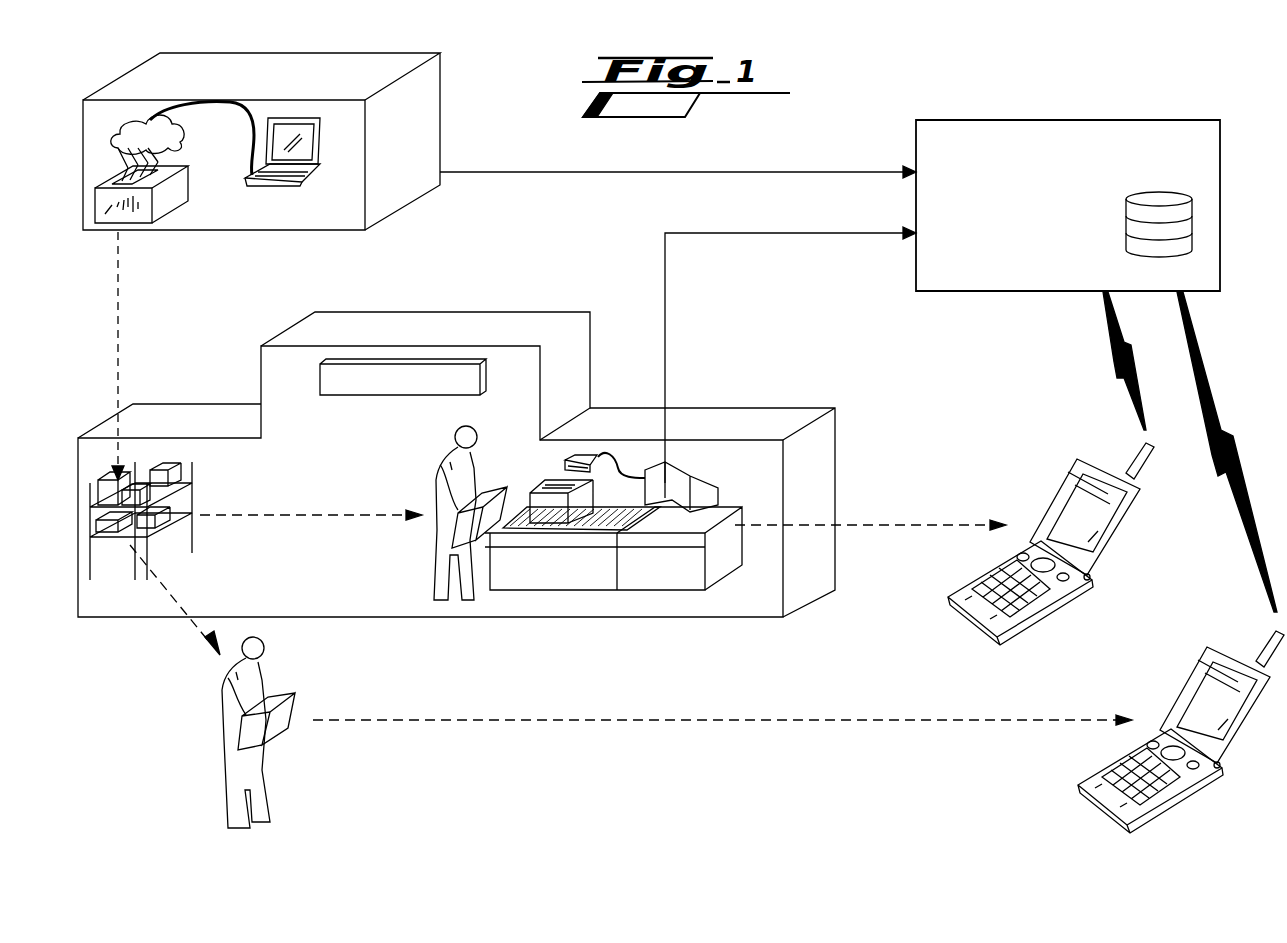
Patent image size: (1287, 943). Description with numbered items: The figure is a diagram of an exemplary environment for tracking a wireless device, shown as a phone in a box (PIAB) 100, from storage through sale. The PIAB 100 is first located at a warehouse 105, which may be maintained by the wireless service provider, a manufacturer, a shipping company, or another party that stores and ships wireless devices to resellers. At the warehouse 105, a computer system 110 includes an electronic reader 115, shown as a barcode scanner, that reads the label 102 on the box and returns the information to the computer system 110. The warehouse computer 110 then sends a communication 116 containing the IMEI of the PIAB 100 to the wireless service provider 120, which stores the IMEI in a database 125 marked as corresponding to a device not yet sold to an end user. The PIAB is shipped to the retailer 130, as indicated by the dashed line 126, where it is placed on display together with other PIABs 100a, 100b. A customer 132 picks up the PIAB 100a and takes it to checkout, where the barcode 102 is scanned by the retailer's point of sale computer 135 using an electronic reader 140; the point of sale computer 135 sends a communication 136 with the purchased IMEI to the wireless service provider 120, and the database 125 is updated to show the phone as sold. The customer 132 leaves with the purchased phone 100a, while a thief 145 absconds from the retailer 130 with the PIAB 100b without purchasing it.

The phone in a box (PIAB) 100 is at (208, 190).
The PIAB purchased by customer 100a is at (465, 585).
The PIAB taken by thief 100b is at (292, 698).
The label (barcode) 102 is at (122, 178).
The warehouse 105 is at (440, 112).
The computer system (warehouse computer) 110 is at (268, 186).
The electronic reader (barcode scanner) 115 is at (182, 146).
The communication 116 is at (773, 170).
The wireless service provider 120 is at (1090, 118).
The database 125 is at (1160, 196).
The dashed line (shipment) 126 is at (118, 330).
The retailer 130 is at (378, 312).
The customer 132 is at (440, 440).
The point of sale computer 135 is at (700, 480).
The communication 136 is at (697, 230).
The electronic reader 140 is at (578, 455).
The thief 145 is at (232, 683).